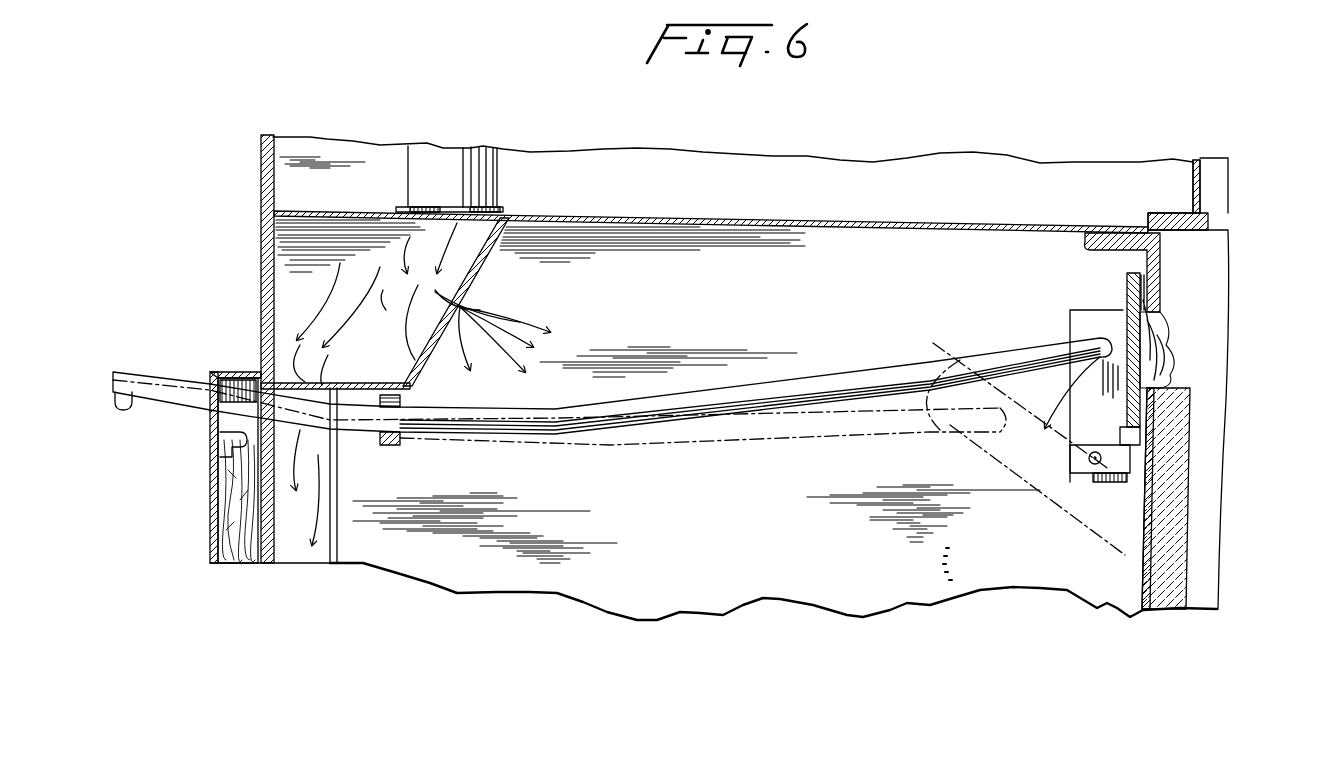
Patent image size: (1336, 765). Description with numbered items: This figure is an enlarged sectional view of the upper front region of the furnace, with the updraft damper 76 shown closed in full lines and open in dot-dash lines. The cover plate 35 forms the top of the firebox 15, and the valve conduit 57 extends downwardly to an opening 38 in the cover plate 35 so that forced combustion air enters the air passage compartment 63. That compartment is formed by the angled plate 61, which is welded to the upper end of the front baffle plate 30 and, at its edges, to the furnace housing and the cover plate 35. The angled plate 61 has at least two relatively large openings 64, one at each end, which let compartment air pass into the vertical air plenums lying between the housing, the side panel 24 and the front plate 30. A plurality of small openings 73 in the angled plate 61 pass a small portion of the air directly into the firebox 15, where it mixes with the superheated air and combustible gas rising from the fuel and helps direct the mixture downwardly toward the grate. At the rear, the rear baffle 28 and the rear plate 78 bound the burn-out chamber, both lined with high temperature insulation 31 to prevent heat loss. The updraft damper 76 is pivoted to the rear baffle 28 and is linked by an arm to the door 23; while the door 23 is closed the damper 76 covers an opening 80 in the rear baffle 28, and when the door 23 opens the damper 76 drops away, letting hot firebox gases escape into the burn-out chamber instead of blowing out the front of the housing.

The firebox 15 is at (790, 560).
The door 23 is at (210, 480).
The side panel 24 is at (216, 563).
The rear baffle 28 is at (1150, 525).
The front baffle plate 30 is at (333, 543).
The high temperature insulation 31 is at (1177, 470).
The cover plate 35 is at (840, 222).
The opening 38 is at (487, 207).
The valve conduit 57 is at (445, 147).
The angled plate 61 is at (485, 270).
The air passage compartment 63 is at (313, 273).
The opening 64 is at (275, 387).
The small openings 73 is at (468, 343).
The updraft damper 76 is at (1173, 328).
The rear plate 78 is at (805, 370).
The opening 80 is at (1170, 373).